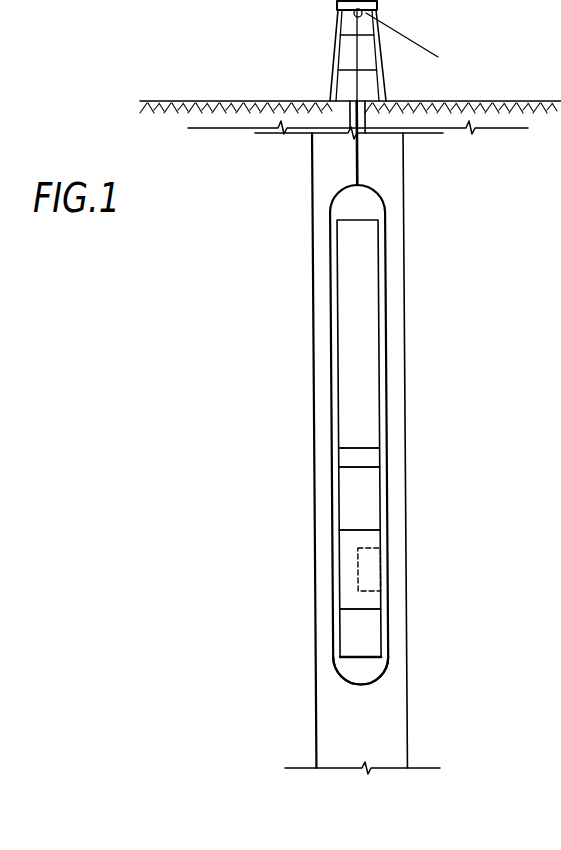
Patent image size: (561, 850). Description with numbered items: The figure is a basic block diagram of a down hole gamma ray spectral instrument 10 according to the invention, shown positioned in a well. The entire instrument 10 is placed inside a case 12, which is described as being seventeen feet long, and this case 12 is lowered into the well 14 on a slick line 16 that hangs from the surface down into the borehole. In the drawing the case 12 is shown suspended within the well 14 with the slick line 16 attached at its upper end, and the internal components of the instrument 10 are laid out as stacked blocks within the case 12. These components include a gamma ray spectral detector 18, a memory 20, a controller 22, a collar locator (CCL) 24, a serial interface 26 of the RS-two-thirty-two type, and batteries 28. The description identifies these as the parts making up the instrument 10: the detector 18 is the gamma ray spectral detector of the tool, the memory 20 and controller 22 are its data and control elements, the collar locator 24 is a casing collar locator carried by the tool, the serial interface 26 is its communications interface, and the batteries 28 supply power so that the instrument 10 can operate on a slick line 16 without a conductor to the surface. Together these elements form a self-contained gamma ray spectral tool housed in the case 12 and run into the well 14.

The down hole gamma ray spectral instrument 10 is at (390, 287).
The case 12 is at (384, 677).
The well 14 is at (405, 203).
The slick line 16 is at (355, 160).
The gamma ray spectral detector 18 is at (348, 632).
The memory 20 is at (373, 567).
The controller 22 is at (345, 562).
The collar locator (CCL) 24 is at (370, 503).
The RS-232 interface 26 is at (370, 457).
The batteries 28 is at (345, 358).